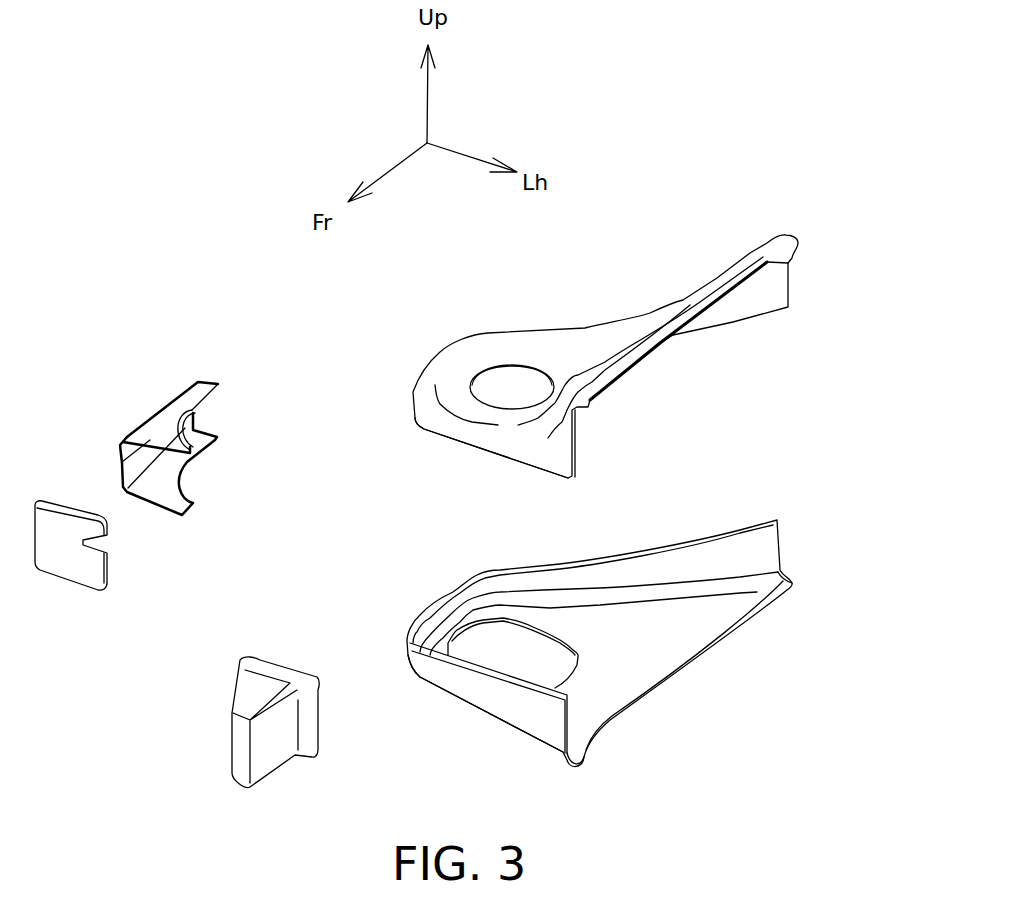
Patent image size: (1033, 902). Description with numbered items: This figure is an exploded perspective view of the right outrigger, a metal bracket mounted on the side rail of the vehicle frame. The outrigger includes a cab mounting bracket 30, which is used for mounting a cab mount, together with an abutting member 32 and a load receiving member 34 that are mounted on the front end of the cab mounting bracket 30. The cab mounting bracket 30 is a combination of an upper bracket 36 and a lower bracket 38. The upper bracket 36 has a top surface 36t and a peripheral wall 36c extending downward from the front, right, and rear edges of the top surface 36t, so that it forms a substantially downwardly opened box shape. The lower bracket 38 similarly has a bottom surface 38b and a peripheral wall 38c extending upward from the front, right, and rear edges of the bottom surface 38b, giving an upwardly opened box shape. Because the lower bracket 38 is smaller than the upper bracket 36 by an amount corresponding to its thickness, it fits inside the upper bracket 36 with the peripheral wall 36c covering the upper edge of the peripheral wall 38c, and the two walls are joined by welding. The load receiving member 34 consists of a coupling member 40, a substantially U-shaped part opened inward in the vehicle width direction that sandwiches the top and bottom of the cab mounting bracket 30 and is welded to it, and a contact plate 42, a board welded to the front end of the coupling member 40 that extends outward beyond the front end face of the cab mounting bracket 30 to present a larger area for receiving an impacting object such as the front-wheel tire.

The cab mounting bracket 30 is at (680, 236).
The abutting member 32 is at (240, 767).
The load receiving member 34 is at (110, 388).
The upper bracket 36 is at (522, 297).
The top surface 36t is at (578, 342).
The peripheral wall 36c is at (460, 433).
The lower bracket 38 is at (777, 647).
The bottom surface 38b is at (658, 662).
The peripheral wall 38c is at (500, 697).
The coupling member 40 is at (167, 418).
The contact plate 42 is at (73, 560).